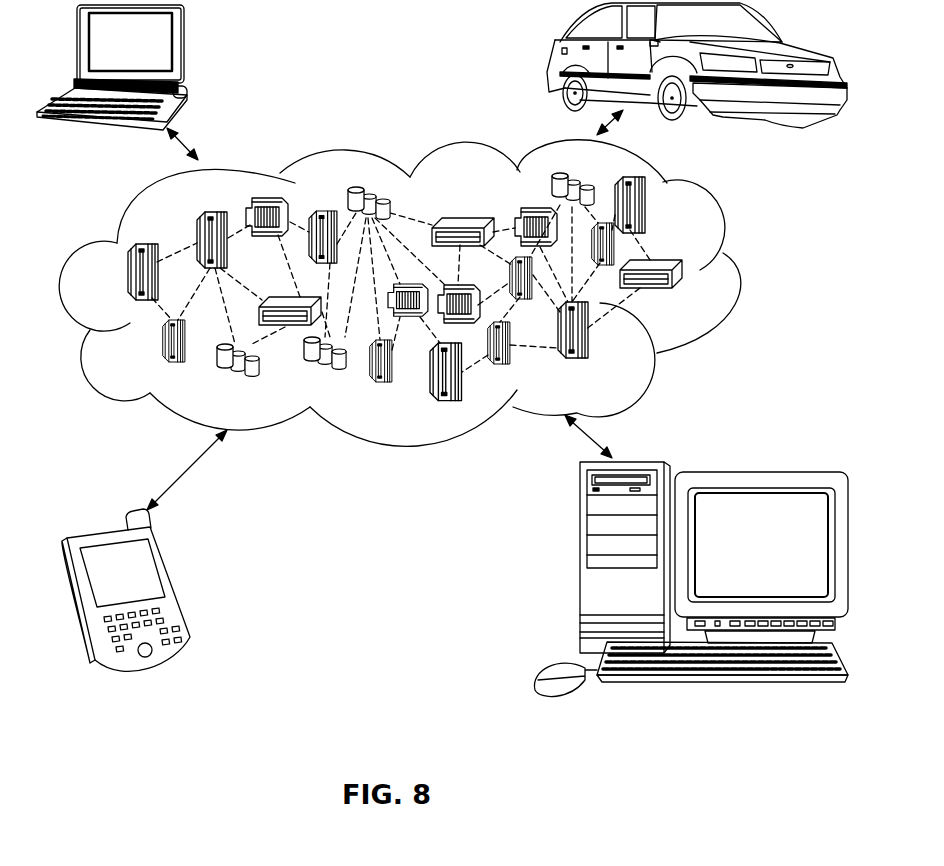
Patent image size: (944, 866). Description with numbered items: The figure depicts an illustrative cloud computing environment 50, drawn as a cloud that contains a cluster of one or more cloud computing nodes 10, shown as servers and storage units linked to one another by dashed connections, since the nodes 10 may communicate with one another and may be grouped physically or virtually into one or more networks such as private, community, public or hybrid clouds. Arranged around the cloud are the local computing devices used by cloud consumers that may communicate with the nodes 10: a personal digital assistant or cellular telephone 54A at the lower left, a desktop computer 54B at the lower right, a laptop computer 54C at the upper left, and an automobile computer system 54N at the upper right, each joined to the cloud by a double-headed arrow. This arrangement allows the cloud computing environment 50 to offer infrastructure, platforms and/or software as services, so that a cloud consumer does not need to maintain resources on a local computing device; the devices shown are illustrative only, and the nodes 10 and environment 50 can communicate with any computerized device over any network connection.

The cloud computing nodes 10 is at (712, 295).
The cloud computing environment 50 is at (728, 237).
The personal digital assistant or cellular telephone 54A is at (173, 583).
The desktop computer 54B is at (580, 565).
The laptop computer 54C is at (187, 47).
The automobile computer system 54N is at (555, 52).